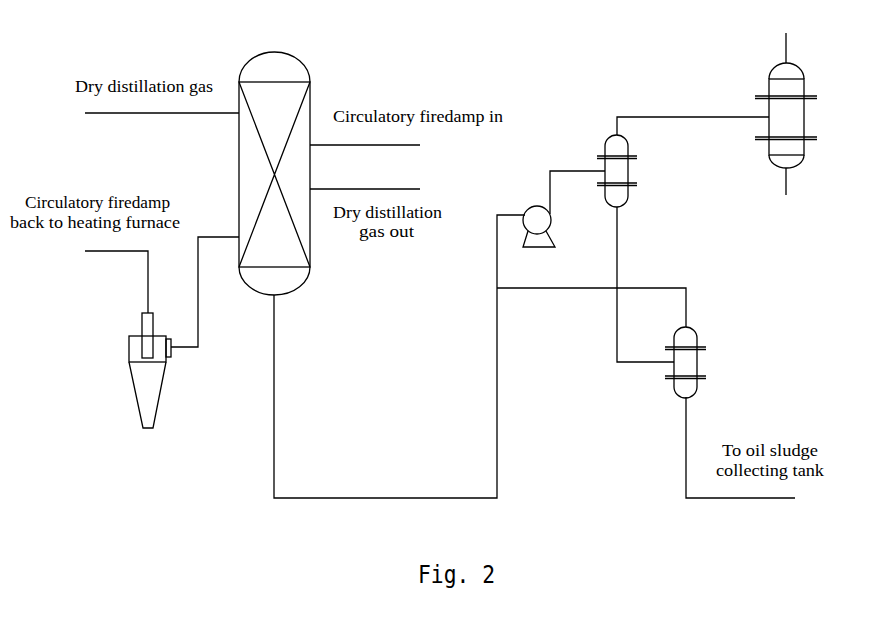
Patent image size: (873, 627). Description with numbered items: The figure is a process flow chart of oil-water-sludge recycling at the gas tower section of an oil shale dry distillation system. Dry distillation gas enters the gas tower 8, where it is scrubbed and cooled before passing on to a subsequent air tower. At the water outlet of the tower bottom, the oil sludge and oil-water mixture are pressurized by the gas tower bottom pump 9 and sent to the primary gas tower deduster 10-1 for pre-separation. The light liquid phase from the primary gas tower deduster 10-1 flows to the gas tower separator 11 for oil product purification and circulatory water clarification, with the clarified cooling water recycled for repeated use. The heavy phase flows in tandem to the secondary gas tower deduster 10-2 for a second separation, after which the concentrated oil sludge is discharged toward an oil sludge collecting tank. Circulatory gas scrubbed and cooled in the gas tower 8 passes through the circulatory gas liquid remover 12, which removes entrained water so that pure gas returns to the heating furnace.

The gas tower 8 is at (287, 165).
The gas tower bottom pump 9 is at (551, 226).
The primary gas tower deduster 10-1 is at (642, 171).
The secondary gas tower deduster 10-2 is at (714, 362).
The gas tower separator 11 is at (801, 115).
The circulatory gas liquid remover 12 is at (164, 370).